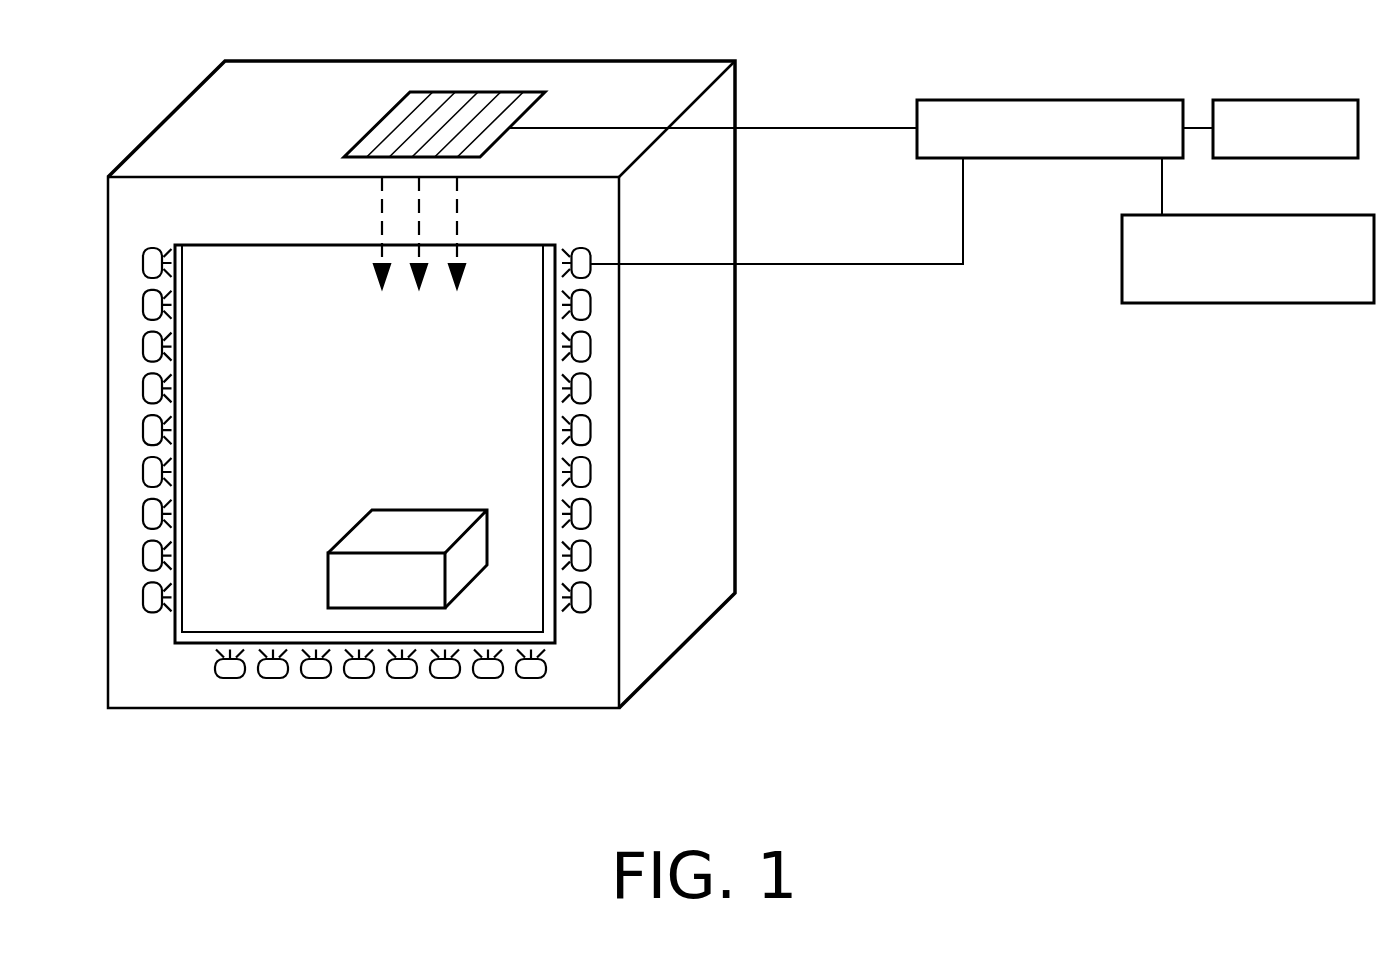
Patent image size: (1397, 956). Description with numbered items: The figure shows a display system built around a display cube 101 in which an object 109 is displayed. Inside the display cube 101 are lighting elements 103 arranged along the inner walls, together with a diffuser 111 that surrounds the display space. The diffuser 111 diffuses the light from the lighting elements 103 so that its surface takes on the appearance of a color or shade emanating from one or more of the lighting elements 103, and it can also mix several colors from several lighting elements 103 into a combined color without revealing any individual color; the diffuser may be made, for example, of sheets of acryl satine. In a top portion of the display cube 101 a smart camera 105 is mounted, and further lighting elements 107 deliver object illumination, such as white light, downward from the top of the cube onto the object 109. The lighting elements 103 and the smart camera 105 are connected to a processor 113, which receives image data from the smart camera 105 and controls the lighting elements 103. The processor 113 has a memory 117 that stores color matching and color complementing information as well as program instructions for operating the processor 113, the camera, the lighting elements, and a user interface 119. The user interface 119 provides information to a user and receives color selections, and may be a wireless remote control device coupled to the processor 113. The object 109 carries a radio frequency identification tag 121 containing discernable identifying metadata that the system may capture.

The display cube 101 is at (737, 463).
The lighting elements 103 is at (591, 560).
The smart camera 105 is at (379, 122).
The lighting elements 107 is at (458, 231).
The object 109 is at (355, 559).
The diffuser 111 is at (175, 632).
The processor 113 is at (1050, 100).
The memory 117 is at (1287, 100).
The user interface 119 is at (1183, 303).
The radio frequency identification tag 121 is at (411, 597).